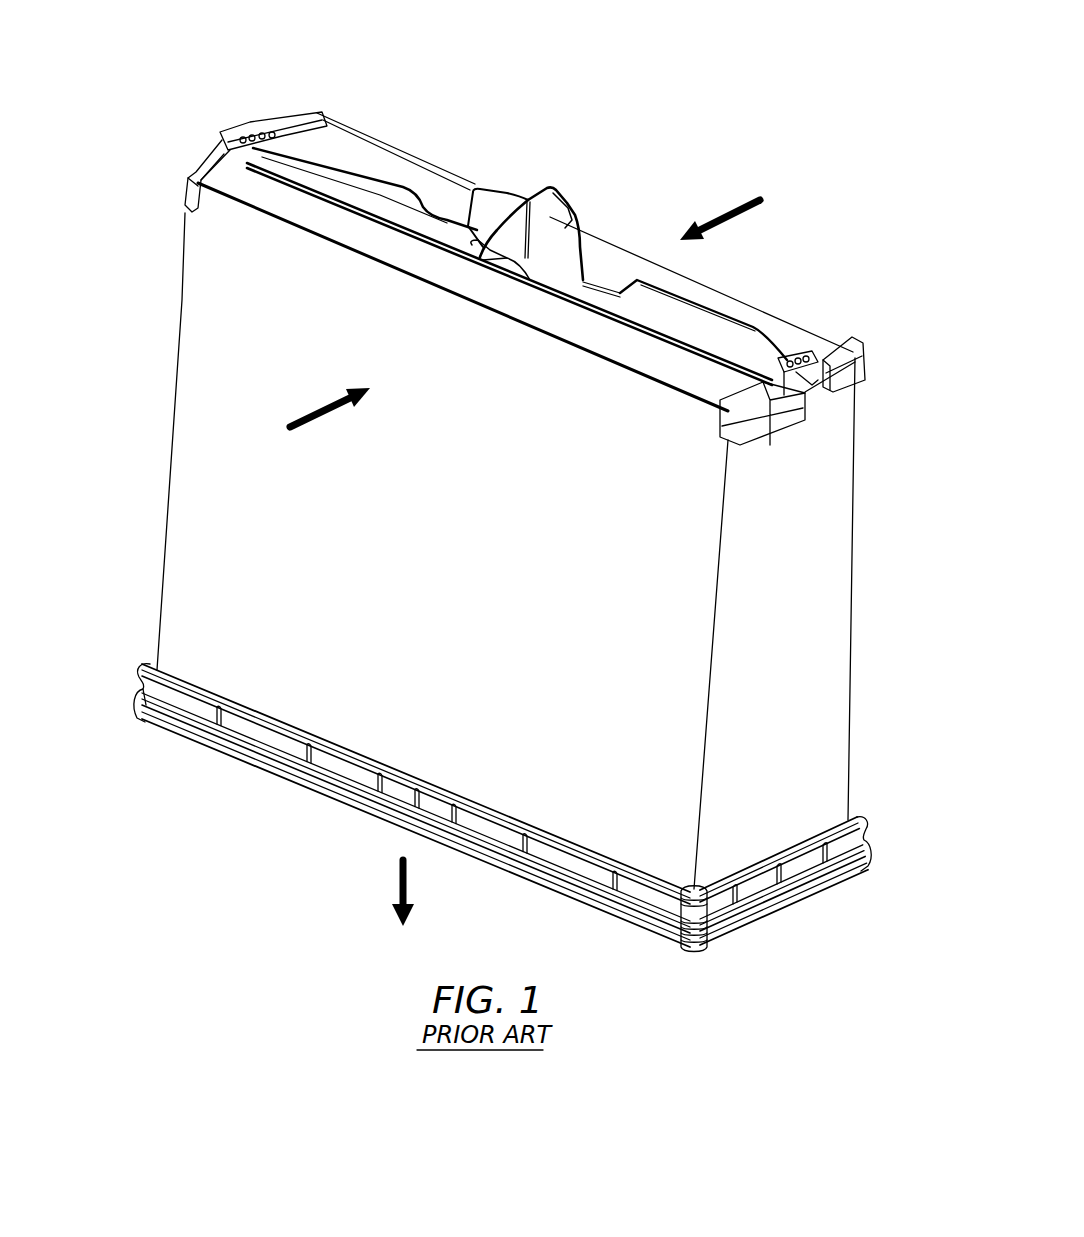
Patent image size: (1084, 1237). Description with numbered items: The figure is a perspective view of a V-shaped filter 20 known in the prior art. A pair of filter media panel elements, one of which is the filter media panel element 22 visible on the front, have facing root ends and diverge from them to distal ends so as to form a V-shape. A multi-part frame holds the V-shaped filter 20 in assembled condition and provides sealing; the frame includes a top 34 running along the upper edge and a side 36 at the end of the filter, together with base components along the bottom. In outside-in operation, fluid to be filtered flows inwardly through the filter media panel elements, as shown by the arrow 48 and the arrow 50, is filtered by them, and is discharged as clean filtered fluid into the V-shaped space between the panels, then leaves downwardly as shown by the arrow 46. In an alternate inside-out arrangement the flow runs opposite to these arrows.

The V-shaped filter 20 is at (508, 486).
The filter media panel element 22 is at (197, 337).
The top 34 is at (708, 307).
The side 36 is at (817, 650).
The arrow 46 is at (400, 890).
The arrow 48 is at (318, 417).
The arrow 50 is at (728, 210).